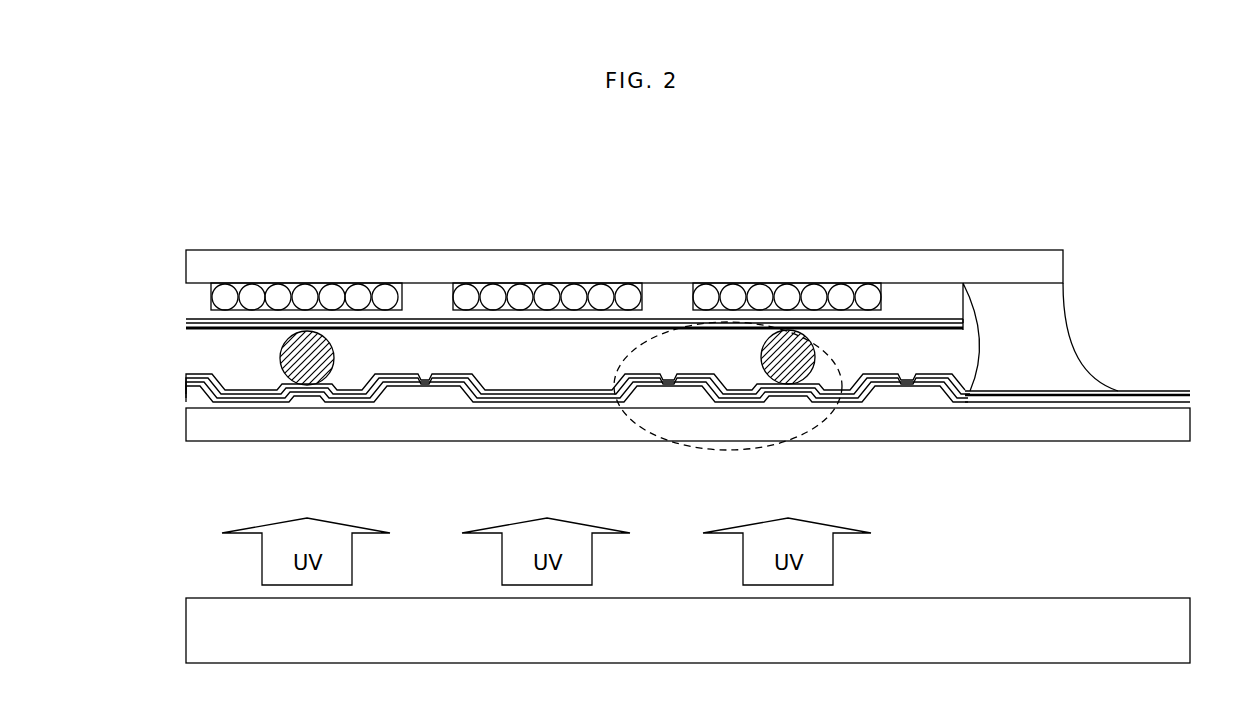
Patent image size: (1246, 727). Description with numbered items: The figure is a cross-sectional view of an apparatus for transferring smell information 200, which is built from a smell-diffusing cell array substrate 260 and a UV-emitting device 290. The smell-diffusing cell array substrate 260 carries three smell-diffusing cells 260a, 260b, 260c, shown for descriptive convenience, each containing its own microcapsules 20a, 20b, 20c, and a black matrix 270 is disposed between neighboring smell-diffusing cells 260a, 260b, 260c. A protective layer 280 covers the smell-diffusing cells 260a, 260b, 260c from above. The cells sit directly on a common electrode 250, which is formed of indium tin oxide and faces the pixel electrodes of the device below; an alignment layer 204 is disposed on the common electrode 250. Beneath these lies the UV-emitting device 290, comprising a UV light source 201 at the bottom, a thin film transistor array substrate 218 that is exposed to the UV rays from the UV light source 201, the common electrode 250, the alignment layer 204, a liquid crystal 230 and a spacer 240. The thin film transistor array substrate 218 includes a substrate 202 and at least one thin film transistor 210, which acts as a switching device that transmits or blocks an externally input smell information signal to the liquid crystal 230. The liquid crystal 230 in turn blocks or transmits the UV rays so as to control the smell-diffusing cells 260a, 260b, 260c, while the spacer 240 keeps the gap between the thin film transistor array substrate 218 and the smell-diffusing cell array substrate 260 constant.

The apparatus for transferring smell information 200 is at (1097, 220).
The UV light source 201 is at (188, 632).
The substrate 202 is at (188, 423).
The alignment layer 204 is at (188, 327).
The thin film transistor 210 is at (648, 412).
The thin film transistor array substrate 218 is at (1134, 389).
The liquid crystal 230 is at (549, 365).
The spacer 240 is at (307, 385).
The common electrode 250 is at (188, 321).
The smell-diffusing cell array substrate 260 is at (828, 193).
The smell-diffusing cell 260a is at (306, 254).
The smell-diffusing cell 260b is at (547, 254).
The smell-diffusing cell 260c is at (787, 254).
The microcapsule 20a is at (251, 284).
The microcapsule 20b is at (491, 284).
The microcapsule 20c is at (731, 284).
The black matrix 270 is at (421, 296).
The protective layer 280 is at (188, 265).
The UV-emitting device 290 is at (1122, 340).